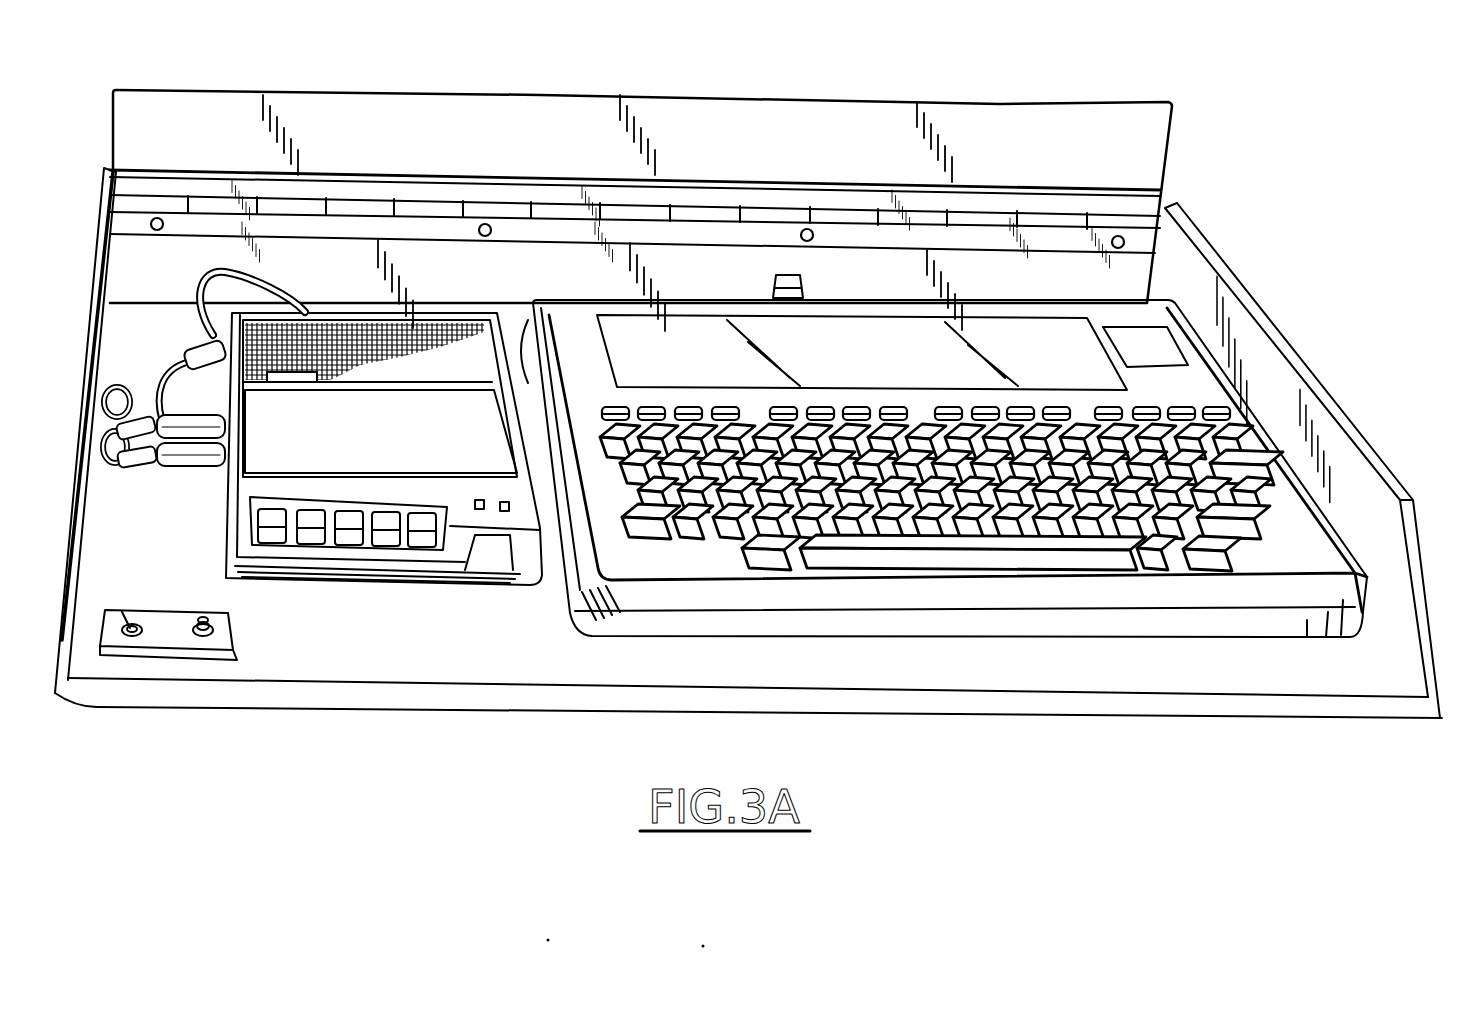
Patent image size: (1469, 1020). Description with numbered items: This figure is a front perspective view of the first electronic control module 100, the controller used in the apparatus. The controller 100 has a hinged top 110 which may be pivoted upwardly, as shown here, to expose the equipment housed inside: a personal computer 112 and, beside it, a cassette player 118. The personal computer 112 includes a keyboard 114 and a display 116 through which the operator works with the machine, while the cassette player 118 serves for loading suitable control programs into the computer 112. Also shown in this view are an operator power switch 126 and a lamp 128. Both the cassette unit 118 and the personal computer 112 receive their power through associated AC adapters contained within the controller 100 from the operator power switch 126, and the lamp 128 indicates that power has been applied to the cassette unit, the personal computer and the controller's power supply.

The first electronic control module 100 is at (1298, 215).
The hinged top 110 is at (1160, 147).
The personal computer 112 is at (1222, 392).
The keyboard 114 is at (1277, 477).
The display 116 is at (888, 372).
The cassette player 118 is at (413, 595).
The operator power switch 126 is at (133, 626).
The lamp 128 is at (216, 625).